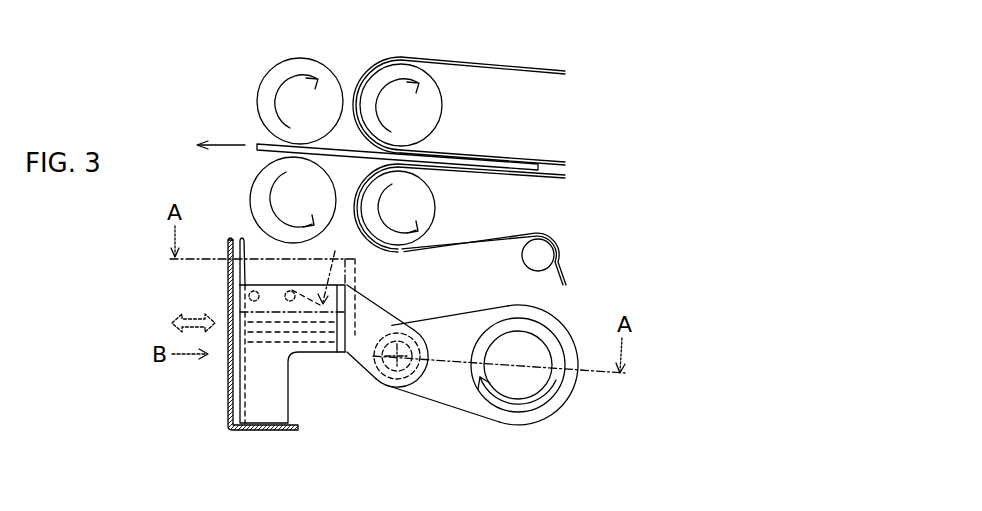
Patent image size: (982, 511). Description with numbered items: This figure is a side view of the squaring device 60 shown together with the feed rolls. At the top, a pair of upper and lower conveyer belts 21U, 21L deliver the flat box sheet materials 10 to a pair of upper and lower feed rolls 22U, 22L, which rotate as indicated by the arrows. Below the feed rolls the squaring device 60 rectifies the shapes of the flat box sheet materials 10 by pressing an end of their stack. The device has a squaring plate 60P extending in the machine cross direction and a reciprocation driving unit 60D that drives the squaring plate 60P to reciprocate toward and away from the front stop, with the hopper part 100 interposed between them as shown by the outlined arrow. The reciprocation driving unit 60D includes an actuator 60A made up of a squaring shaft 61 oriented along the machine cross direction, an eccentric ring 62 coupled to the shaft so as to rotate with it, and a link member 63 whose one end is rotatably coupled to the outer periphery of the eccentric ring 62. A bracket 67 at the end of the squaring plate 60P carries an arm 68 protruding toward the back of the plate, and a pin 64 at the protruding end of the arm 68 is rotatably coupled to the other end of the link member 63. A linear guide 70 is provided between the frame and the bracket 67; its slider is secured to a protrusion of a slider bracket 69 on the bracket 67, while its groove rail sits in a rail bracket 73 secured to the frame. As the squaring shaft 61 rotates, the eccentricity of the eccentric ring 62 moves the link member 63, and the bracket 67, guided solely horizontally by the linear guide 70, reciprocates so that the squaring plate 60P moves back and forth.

The flat box sheet material 10 is at (260, 140).
The upper conveyer belt 21U is at (540, 68).
The lower conveyer belt 21L is at (557, 180).
The upper feed roll 22U is at (322, 42).
The lower feed roll 22L is at (250, 190).
The squaring device 60 is at (627, 291).
The actuator 60A is at (524, 428).
The reciprocation driving unit 60D is at (607, 410).
The squaring plate 60P is at (230, 390).
The squaring shaft 61 is at (548, 338).
The eccentric ring 62 is at (503, 418).
The link member 63 is at (476, 308).
The pin 64 is at (389, 384).
The bracket 67 is at (290, 390).
The arm 68 is at (382, 312).
The slider bracket 69 is at (358, 284).
The linear guide 70 is at (323, 281).
The rail bracket 73 is at (276, 284).
The hopper part 100 is at (205, 304).